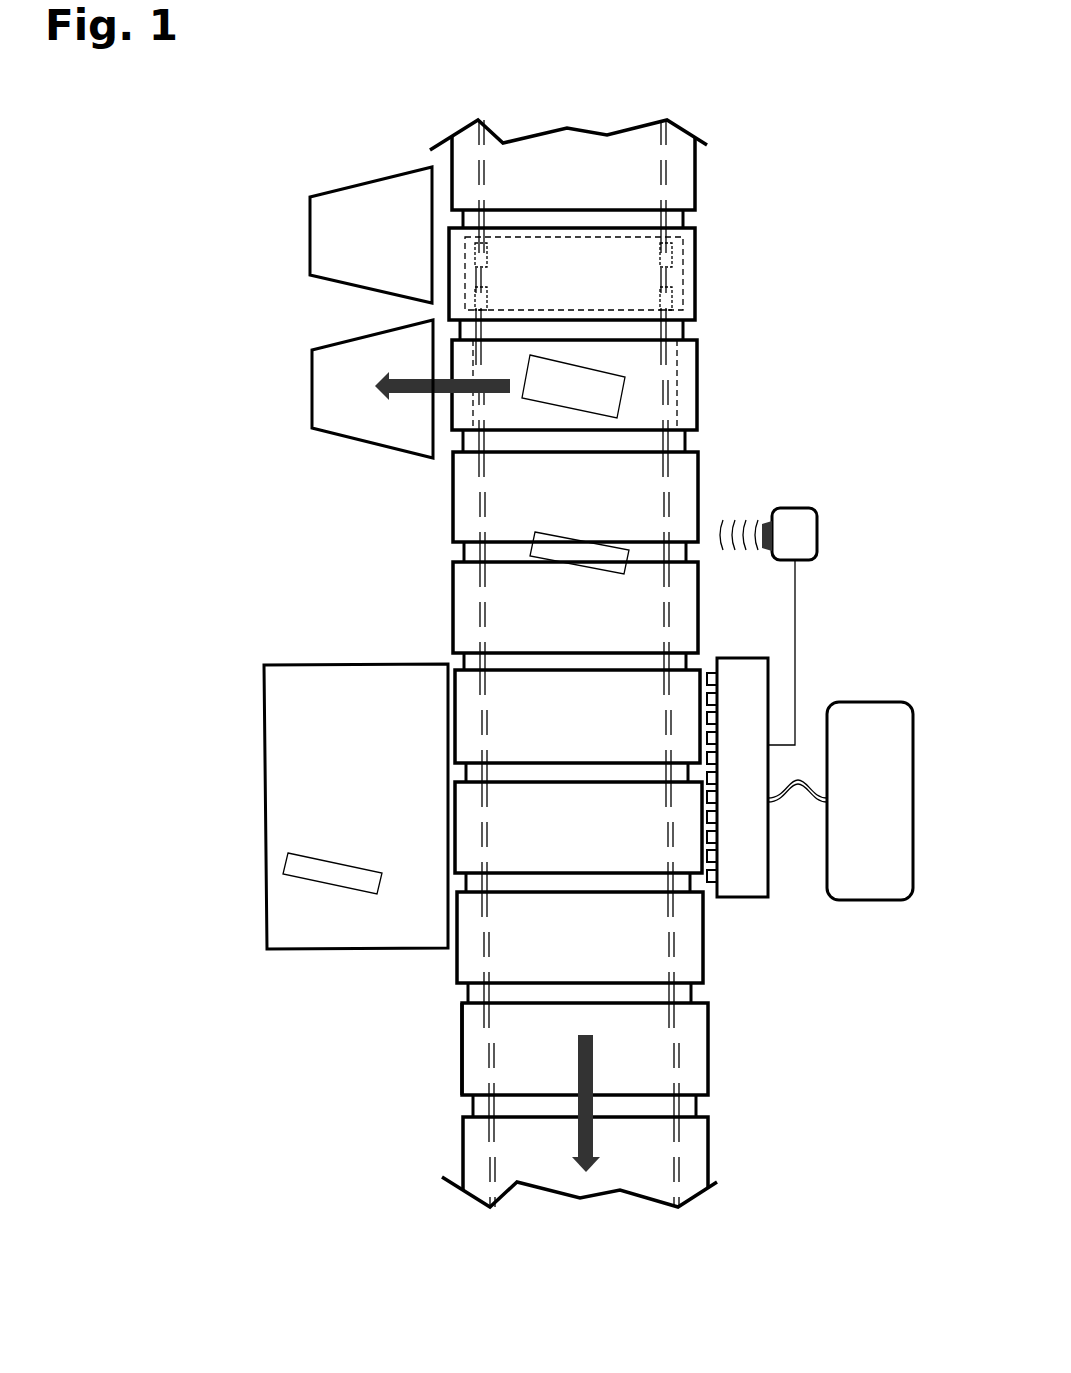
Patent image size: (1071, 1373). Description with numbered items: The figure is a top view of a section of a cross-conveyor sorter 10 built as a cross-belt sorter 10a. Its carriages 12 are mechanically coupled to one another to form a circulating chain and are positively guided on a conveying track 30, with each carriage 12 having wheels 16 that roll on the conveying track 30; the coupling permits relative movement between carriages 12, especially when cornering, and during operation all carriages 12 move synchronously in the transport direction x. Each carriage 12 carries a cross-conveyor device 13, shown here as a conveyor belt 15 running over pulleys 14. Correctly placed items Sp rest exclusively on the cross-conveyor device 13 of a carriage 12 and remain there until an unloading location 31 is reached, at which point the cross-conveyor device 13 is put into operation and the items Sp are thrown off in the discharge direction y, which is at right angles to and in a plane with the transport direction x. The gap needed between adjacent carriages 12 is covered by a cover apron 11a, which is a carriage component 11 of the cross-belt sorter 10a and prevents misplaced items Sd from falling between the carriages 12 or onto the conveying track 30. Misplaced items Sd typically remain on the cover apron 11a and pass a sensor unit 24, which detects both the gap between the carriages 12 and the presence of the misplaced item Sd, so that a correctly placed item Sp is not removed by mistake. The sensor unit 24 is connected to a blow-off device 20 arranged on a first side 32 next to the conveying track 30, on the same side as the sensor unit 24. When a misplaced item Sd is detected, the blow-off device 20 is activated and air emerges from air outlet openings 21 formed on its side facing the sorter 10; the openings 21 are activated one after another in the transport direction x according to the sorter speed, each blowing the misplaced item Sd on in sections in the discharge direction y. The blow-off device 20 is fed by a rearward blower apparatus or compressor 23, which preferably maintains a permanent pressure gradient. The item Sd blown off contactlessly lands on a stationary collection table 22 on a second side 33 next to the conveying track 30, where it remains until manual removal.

The cross-conveyor sorter 10 is at (370, 118).
The cross-belt sorter 10a is at (520, 630).
The carriage component 11 is at (445, 552).
The cover apron 11a is at (685, 218).
The carriage 12 is at (654, 248).
The cross-conveyor device 13 is at (591, 181).
The pulleys 14 is at (690, 333).
The conveyor belt 15 is at (520, 347).
The wheels 16 is at (680, 245).
The blow-off device 20 is at (838, 672).
The air outlet openings 21 is at (707, 673).
The collection table 22 is at (280, 728).
The blower apparatus or compressor 23 is at (867, 900).
The sensor unit 24 is at (817, 528).
The conveying track 30 is at (500, 163).
The unloading location 31 is at (310, 237).
The first side 32 is at (708, 1068).
The second side 33 is at (462, 1068).
The correctly placed item Sp is at (628, 398).
The misplaced item Sd is at (593, 557).
The transport direction x is at (578, 1145).
The discharge direction y is at (398, 393).